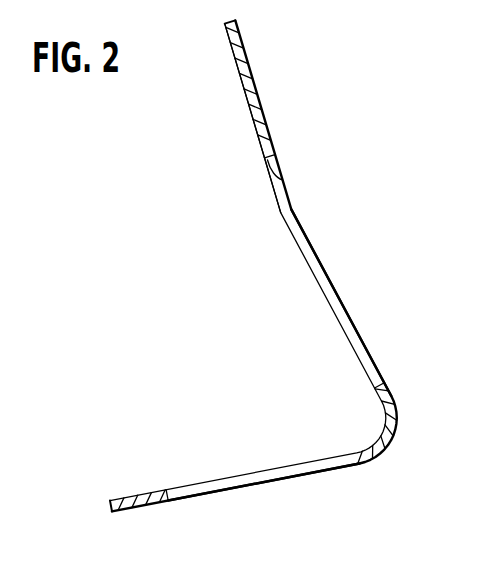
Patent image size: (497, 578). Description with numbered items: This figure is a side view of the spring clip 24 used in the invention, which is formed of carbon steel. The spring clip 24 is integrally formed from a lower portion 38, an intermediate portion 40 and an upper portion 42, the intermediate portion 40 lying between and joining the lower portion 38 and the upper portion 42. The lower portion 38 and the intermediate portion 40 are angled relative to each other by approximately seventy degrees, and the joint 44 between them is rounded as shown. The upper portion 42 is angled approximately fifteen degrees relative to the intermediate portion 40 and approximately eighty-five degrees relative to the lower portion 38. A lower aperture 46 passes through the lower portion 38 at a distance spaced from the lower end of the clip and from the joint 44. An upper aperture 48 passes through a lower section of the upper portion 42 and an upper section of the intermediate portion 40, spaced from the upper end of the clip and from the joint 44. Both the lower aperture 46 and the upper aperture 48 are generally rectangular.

The spring clip 24 is at (335, 262).
The lower portion 38 is at (149, 509).
The intermediate portion 40 is at (376, 353).
The upper portion 42 is at (256, 91).
The joint 44 is at (394, 421).
The lower aperture 46 is at (350, 464).
The upper aperture 48 is at (281, 173).